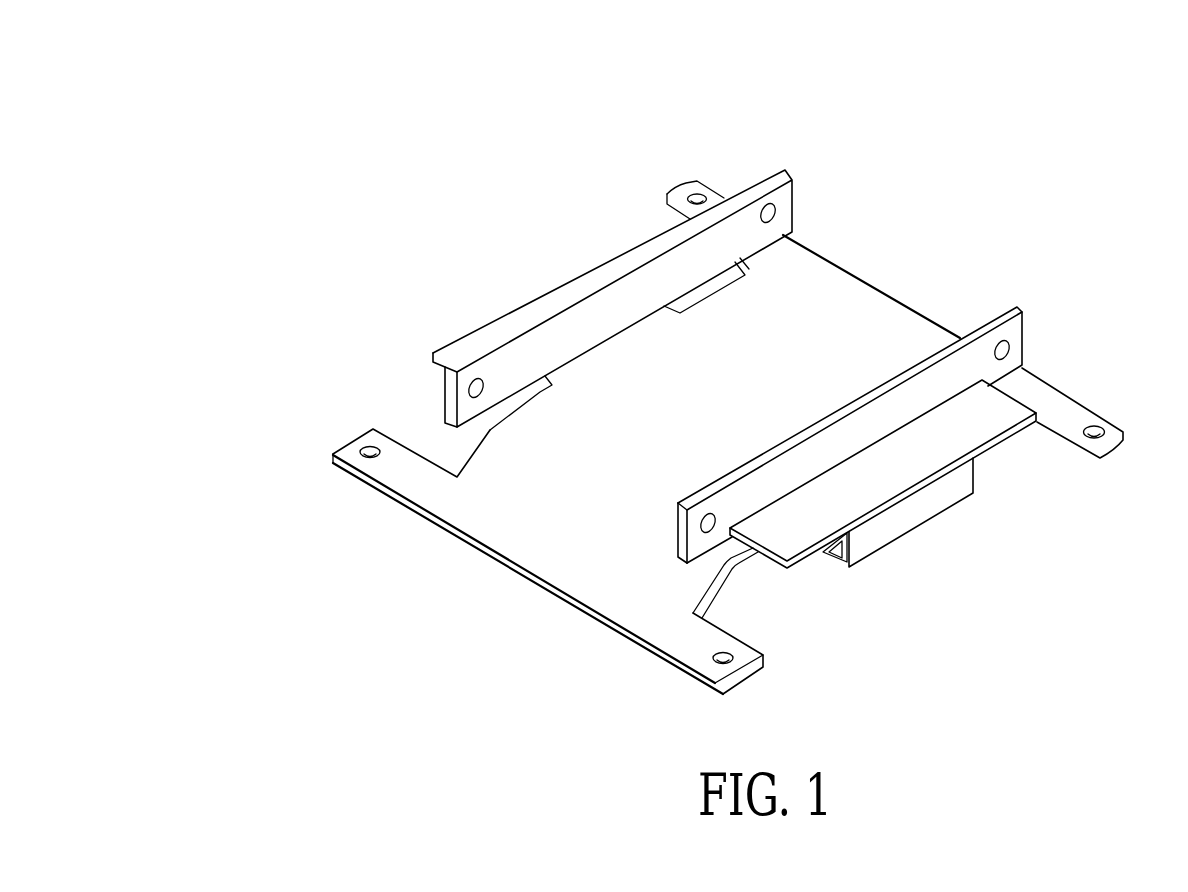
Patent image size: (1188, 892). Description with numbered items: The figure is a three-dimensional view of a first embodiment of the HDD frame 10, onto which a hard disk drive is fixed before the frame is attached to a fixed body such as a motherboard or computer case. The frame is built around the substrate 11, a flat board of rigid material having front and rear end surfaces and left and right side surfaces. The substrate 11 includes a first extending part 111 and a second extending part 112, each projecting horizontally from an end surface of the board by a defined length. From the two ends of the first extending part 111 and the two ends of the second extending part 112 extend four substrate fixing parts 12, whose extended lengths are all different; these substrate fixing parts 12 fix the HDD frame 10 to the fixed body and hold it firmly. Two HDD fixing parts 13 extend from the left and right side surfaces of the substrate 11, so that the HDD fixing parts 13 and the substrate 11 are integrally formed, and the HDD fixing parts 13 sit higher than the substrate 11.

The HDD frame 10 is at (261, 169).
The substrate 11 is at (688, 408).
The first extending part 111 is at (577, 515).
The second extending part 112 is at (887, 313).
The substrate fixing part 12 is at (402, 465).
The HDD fixing part 13 is at (547, 302).